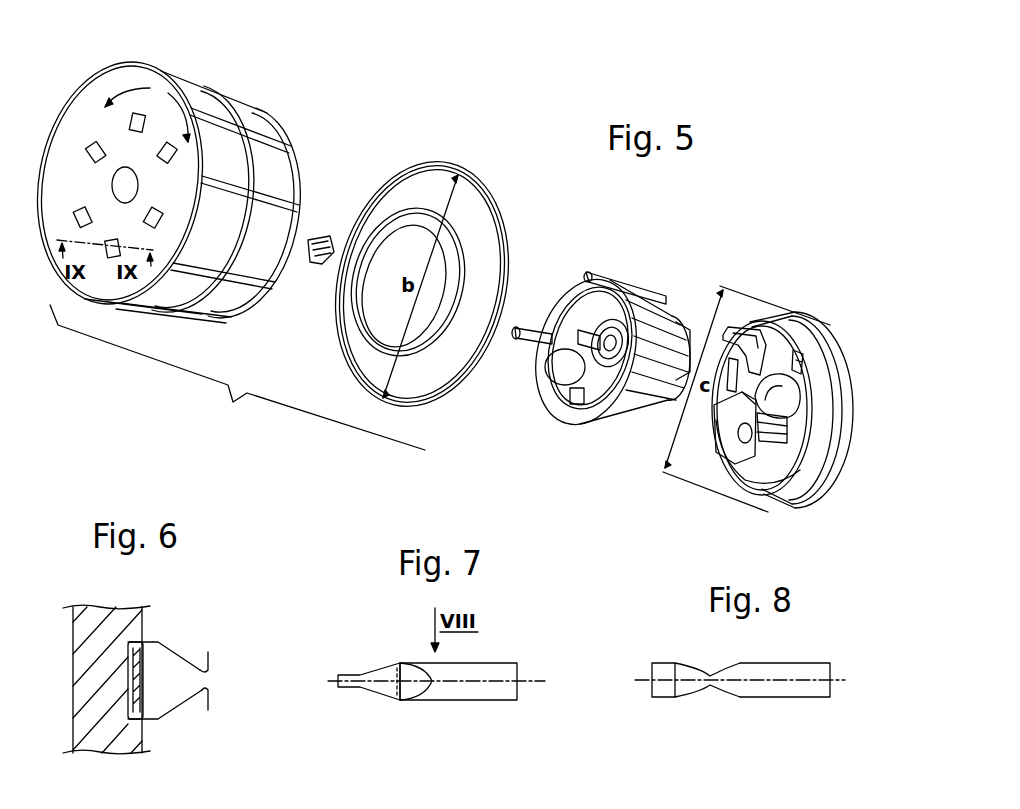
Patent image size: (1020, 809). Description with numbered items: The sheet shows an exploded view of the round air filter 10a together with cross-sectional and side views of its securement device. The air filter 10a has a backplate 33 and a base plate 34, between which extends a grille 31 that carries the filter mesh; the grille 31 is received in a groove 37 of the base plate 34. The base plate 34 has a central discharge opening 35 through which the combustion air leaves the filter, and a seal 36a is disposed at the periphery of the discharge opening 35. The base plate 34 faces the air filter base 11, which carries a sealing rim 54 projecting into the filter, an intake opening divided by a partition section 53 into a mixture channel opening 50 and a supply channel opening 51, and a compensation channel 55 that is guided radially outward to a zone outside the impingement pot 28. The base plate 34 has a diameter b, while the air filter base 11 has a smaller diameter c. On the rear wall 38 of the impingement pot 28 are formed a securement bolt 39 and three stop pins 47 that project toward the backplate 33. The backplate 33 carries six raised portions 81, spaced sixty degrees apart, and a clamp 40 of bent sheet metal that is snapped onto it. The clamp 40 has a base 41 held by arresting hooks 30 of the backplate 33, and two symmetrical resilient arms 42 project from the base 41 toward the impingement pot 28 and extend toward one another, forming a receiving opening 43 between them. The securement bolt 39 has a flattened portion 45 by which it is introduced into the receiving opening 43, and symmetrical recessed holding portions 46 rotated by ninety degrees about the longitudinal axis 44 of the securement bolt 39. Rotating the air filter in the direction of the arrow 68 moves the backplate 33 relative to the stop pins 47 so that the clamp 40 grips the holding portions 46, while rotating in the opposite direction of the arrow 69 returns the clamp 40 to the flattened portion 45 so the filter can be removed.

In FIG. 5, the air filter 10a is at (237, 377).
In FIG. 5, the air filter base 11 is at (795, 333).
In FIG. 5, the impingement pot 28 is at (540, 408).
In FIG. 6, the arresting hooks 30 is at (143, 648).
In FIG. 5, the grille 31 is at (262, 125).
In FIG. 5, the backplate 33 is at (118, 122).
In FIG. 6, the backplate 33 is at (100, 715).
In FIG. 5, the base plate 34 is at (484, 180).
In FIG. 5, the discharge opening 35 is at (390, 322).
In FIG. 5, the seal 36a is at (390, 236).
In FIG. 5, the groove 37 is at (438, 170).
In FIG. 5, the rear wall 38 is at (570, 315).
In FIG. 5, the securement bolt 39 is at (612, 335).
In FIG. 7, the securement bolt 39 is at (460, 690).
In FIG. 8, the securement bolt 39 is at (757, 692).
In FIG. 5, the clamp 40 is at (305, 280).
In FIG. 6, the clamp 40 is at (185, 640).
In FIG. 6, the base 41 is at (150, 712).
In FIG. 6, the arms 42 is at (192, 660).
In FIG. 6, the receiving opening 43 is at (220, 692).
In FIG. 7, the longitudinal axis 44 is at (527, 680).
In FIG. 8, the longitudinal axis 44 is at (800, 682).
In FIG. 7, the flattened portion 45 is at (350, 672).
In FIG. 8, the flattened portion 45 is at (663, 692).
In FIG. 7, the recessed holding portions 46 is at (397, 697).
In FIG. 8, the recessed holding portions 46 is at (710, 688).
In FIG. 5, the stop pins 47 is at (603, 272).
In FIG. 5, the mixture channel opening 50 is at (780, 400).
In FIG. 5, the supply channel opening 51 is at (772, 443).
In FIG. 5, the partition section 53 is at (783, 427).
In FIG. 5, the sealing rim 54 is at (800, 443).
In FIG. 5, the compensation channel 55 is at (745, 333).
In FIG. 5, the arrow 68 is at (178, 102).
In FIG. 5, the arrow 69 is at (144, 85).
In FIG. 5, the raised portions 81 is at (84, 212).